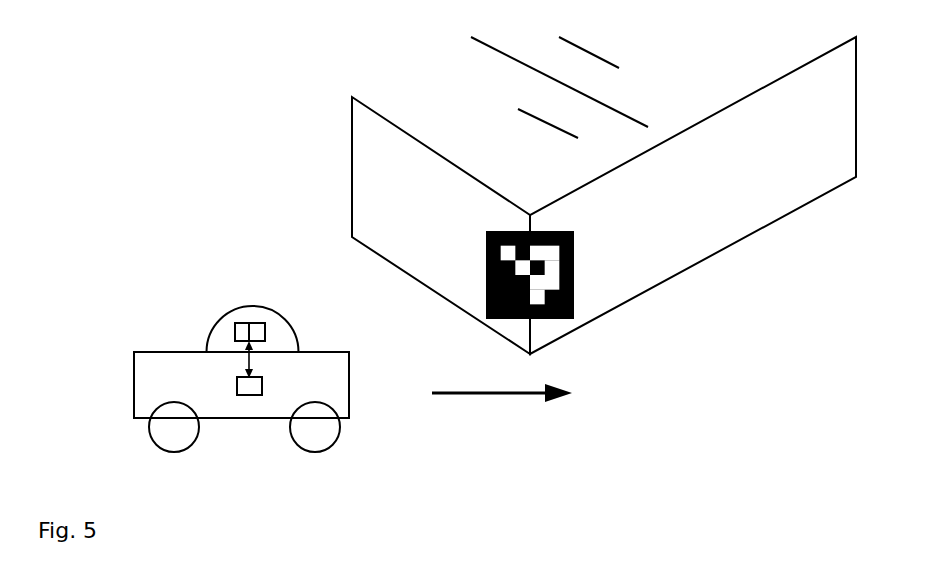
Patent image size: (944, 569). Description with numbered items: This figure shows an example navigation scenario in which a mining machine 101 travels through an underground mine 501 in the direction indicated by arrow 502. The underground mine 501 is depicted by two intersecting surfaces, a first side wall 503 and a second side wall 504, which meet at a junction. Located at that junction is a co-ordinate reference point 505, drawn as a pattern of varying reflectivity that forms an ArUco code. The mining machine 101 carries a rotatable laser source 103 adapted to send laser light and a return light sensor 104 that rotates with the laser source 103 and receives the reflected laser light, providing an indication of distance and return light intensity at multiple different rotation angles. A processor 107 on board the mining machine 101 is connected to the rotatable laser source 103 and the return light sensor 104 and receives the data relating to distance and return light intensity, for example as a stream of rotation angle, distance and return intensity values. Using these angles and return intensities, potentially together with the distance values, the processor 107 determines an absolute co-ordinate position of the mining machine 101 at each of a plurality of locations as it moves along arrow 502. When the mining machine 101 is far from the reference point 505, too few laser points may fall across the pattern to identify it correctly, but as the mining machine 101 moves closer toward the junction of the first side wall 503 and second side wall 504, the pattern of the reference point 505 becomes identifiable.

The mining machine 101 is at (280, 370).
The rotatable laser source 103 is at (235, 334).
The return light sensor 104 is at (261, 333).
The processor 107 is at (237, 387).
The underground mine 501 is at (164, 74).
The arrow 502 is at (487, 395).
The first side wall 503 is at (451, 228).
The second side wall 504 is at (741, 196).
The co-ordinate reference point 505 is at (574, 258).